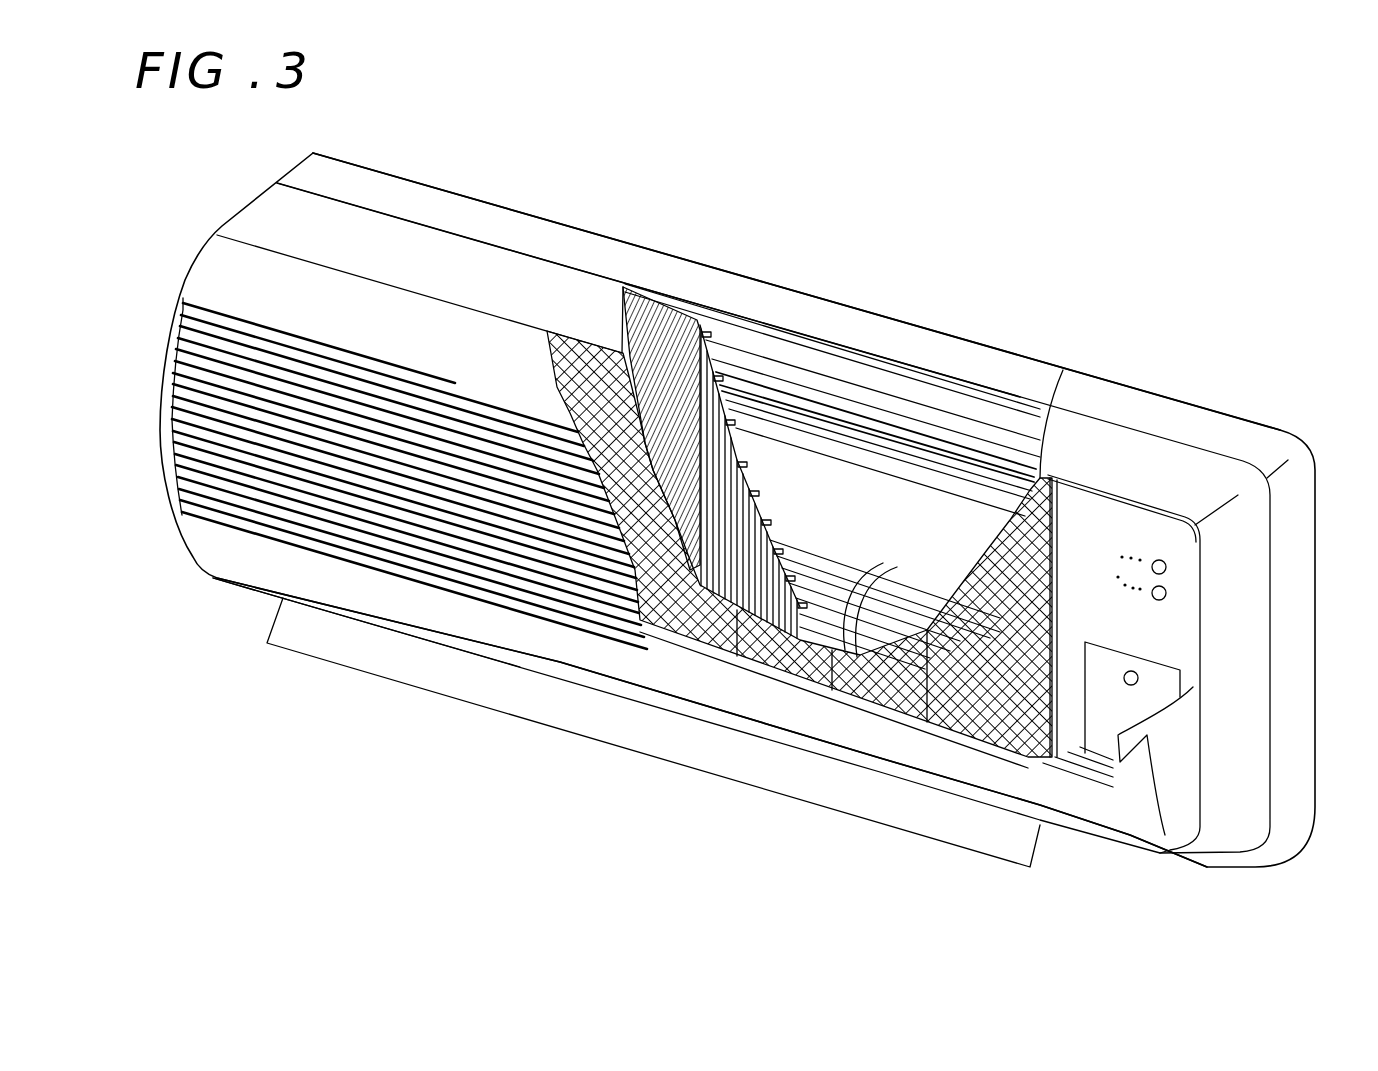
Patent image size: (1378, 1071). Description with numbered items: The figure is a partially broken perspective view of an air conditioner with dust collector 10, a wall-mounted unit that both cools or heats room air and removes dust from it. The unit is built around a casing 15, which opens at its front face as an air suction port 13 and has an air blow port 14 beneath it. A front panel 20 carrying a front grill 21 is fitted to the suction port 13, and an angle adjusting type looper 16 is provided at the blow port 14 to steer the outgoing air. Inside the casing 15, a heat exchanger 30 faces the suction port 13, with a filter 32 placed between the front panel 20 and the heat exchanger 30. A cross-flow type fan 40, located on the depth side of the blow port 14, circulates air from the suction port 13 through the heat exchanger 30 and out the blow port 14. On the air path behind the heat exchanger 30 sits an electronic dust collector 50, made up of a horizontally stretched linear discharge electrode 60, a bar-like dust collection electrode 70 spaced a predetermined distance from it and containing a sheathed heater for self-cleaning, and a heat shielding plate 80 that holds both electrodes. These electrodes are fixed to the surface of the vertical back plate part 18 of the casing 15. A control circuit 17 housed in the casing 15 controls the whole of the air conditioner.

The air conditioner with dust collector 10 is at (424, 93).
The air suction port 13 is at (700, 665).
The air blow port 14 is at (918, 777).
The casing 15 is at (858, 318).
The angle adjusting type looper 16 is at (1027, 840).
The control circuit 17 is at (1163, 677).
The vertical back plate part 18 is at (788, 348).
The front panel 20 is at (413, 607).
The front grill 21 is at (500, 582).
The heat exchanger 30 is at (637, 607).
The filter 32 is at (862, 705).
The cross-flow type fan 40 is at (848, 585).
The electronic dust collector 50 is at (973, 450).
The linear discharge electrode 60 is at (1028, 487).
The dust collection electrode 70 is at (1035, 480).
The heat shielding plate 80 is at (873, 393).